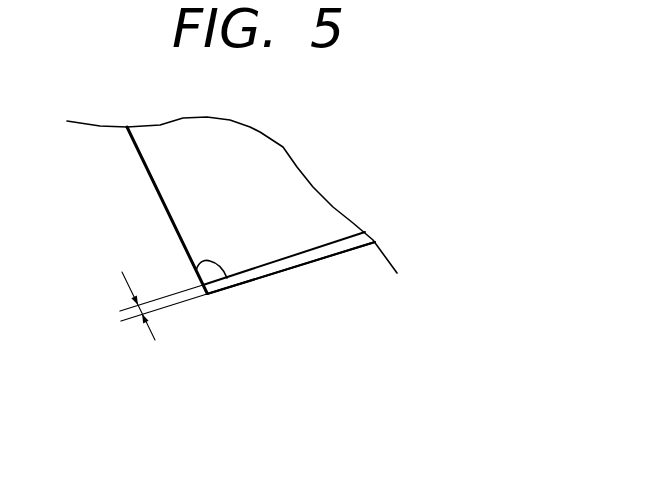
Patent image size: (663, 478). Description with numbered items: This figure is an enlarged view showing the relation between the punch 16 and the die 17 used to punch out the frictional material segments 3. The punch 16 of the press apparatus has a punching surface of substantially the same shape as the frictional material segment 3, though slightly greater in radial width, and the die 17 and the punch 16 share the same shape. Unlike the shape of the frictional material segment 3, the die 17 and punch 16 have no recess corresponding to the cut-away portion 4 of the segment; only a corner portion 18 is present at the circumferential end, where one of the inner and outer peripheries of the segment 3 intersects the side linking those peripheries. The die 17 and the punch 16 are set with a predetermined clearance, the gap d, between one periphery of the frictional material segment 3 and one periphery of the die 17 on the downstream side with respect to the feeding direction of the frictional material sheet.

The frictional material segment 3 is at (297, 175).
The cut-away portion 4 is at (192, 275).
The punch 16 is at (230, 280).
The die 17 is at (287, 269).
The corner portion 18 is at (215, 294).
The gap d is at (129, 306).